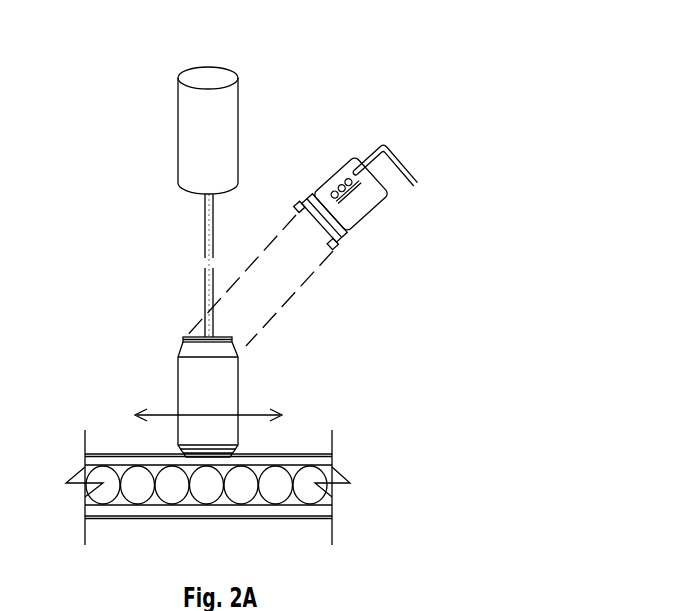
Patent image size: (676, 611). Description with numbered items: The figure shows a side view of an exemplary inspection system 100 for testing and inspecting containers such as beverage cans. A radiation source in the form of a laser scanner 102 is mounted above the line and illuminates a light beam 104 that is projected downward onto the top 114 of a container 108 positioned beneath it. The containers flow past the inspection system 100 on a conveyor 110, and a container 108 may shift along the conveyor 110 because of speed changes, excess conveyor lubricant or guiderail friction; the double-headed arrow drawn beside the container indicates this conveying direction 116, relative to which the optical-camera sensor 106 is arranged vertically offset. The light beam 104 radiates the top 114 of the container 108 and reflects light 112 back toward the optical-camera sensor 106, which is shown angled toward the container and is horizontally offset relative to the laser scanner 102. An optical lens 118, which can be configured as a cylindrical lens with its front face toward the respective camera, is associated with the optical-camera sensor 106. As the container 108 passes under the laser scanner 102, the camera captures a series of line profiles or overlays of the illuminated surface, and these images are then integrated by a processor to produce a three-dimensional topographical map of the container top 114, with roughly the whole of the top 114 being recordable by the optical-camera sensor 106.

The inspection system 100 is at (123, 108).
The laser scanner 102 is at (219, 122).
The light beam 104 is at (205, 238).
The optical-camera sensor 106 is at (368, 202).
The container 108 is at (158, 390).
The conveyor 110 is at (273, 528).
The reflected light 112 is at (285, 302).
The top of the container 114 is at (183, 338).
The conveying direction 116 is at (245, 410).
The optical lens 118 is at (325, 255).